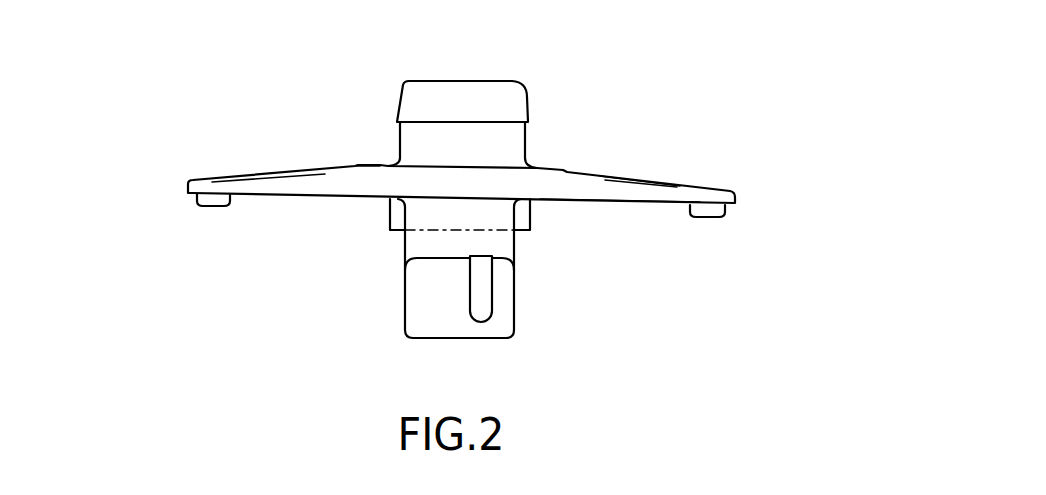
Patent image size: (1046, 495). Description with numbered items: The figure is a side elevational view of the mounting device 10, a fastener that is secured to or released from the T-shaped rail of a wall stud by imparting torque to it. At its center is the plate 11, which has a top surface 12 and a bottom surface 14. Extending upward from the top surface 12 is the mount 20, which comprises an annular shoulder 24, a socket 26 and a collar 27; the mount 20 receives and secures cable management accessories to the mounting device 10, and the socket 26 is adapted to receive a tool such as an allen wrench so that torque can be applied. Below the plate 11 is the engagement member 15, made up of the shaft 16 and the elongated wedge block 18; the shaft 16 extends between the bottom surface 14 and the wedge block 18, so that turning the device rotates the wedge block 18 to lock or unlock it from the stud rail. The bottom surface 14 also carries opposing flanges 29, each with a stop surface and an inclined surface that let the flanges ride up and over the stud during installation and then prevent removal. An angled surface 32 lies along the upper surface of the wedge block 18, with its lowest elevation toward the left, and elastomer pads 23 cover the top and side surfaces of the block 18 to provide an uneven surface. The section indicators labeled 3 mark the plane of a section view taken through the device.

The mounting device 10 is at (655, 142).
The plate 11 is at (272, 183).
The top surface 12 is at (670, 183).
The bottom surface 14 is at (572, 205).
The engagement member 15 is at (477, 323).
The shaft 16 is at (452, 268).
The elongated wedge block 18 is at (494, 361).
The mount 20 is at (477, 89).
The elastomeric pads 23 is at (477, 287).
The annular shoulder 24 is at (420, 97).
The socket 26 is at (482, 75).
The collar 27 is at (358, 165).
The opposing flanges 29 is at (215, 207).
The angled surface 32 is at (435, 260).
The section line 3- 3 is at (188, 193).